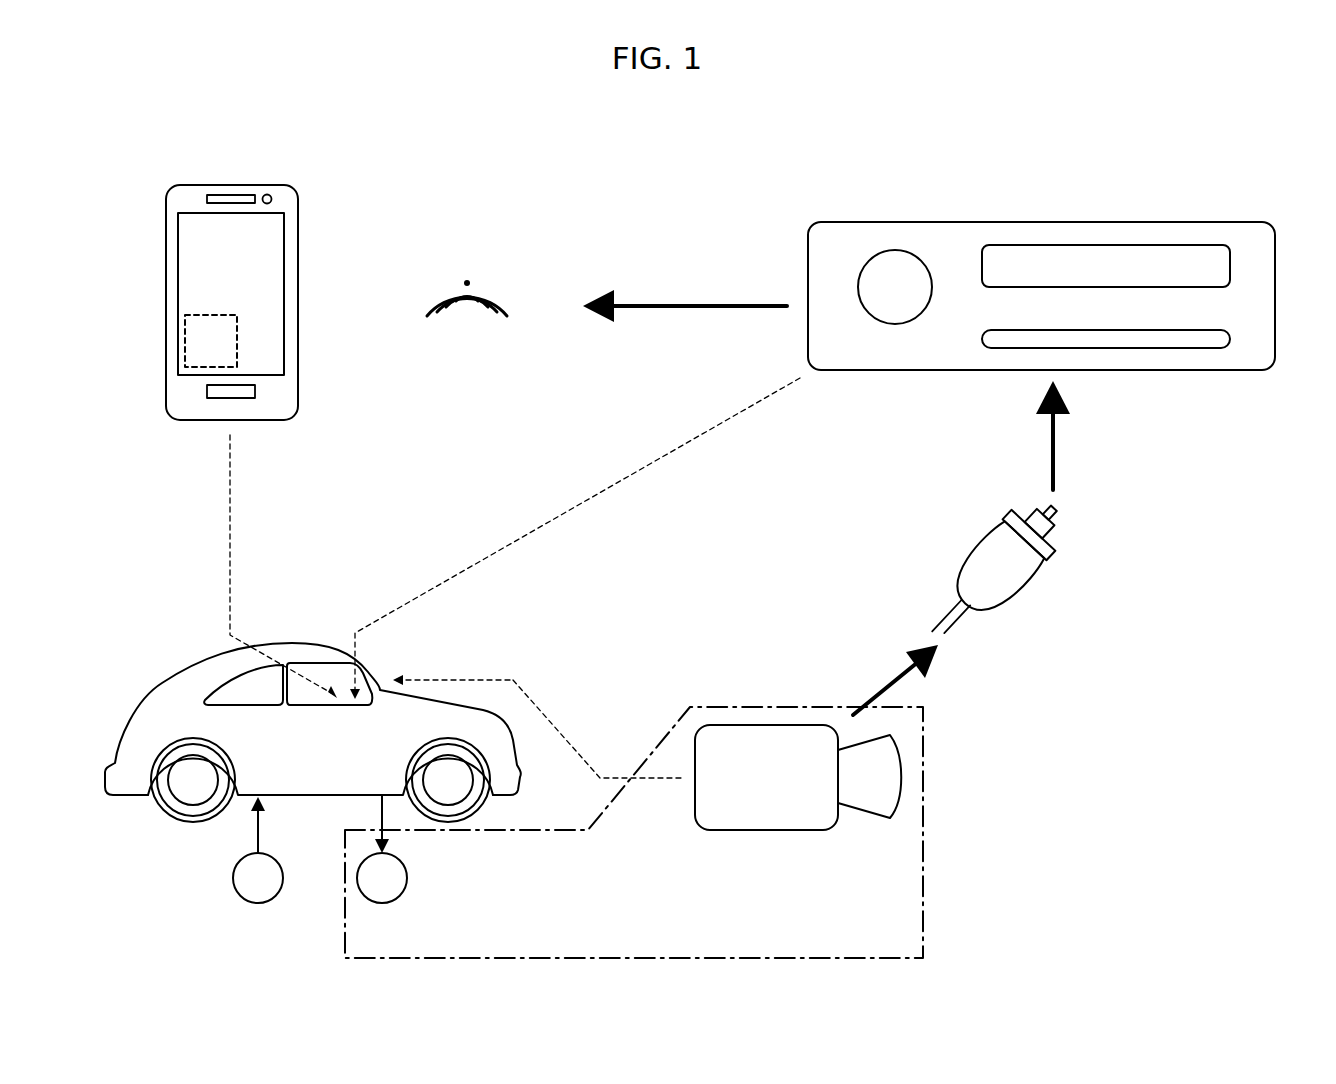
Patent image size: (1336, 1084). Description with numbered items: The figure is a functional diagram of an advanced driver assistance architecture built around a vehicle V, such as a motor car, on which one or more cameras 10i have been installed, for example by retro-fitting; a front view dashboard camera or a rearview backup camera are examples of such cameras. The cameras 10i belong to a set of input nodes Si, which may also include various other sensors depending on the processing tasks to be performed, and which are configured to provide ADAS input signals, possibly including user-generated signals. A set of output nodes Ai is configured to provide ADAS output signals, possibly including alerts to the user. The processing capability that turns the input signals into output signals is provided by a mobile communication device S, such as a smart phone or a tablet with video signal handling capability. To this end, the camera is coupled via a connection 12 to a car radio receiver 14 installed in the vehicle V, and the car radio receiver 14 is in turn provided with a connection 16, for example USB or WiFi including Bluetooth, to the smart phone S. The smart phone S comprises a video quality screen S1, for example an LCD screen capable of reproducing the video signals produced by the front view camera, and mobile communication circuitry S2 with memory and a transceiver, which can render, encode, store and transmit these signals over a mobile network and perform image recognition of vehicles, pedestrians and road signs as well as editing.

The mobile communication device S is at (243, 181).
The video quality screen S1 is at (205, 272).
The mobile communication circuitry S2 is at (198, 347).
The car radio receiver 14 is at (1268, 232).
The connection 16 is at (798, 266).
The connection 12 is at (1025, 572).
The cameras 10i is at (750, 822).
The input nodes Si is at (903, 897).
The output nodes Ai is at (249, 880).
The vehicle V is at (322, 802).